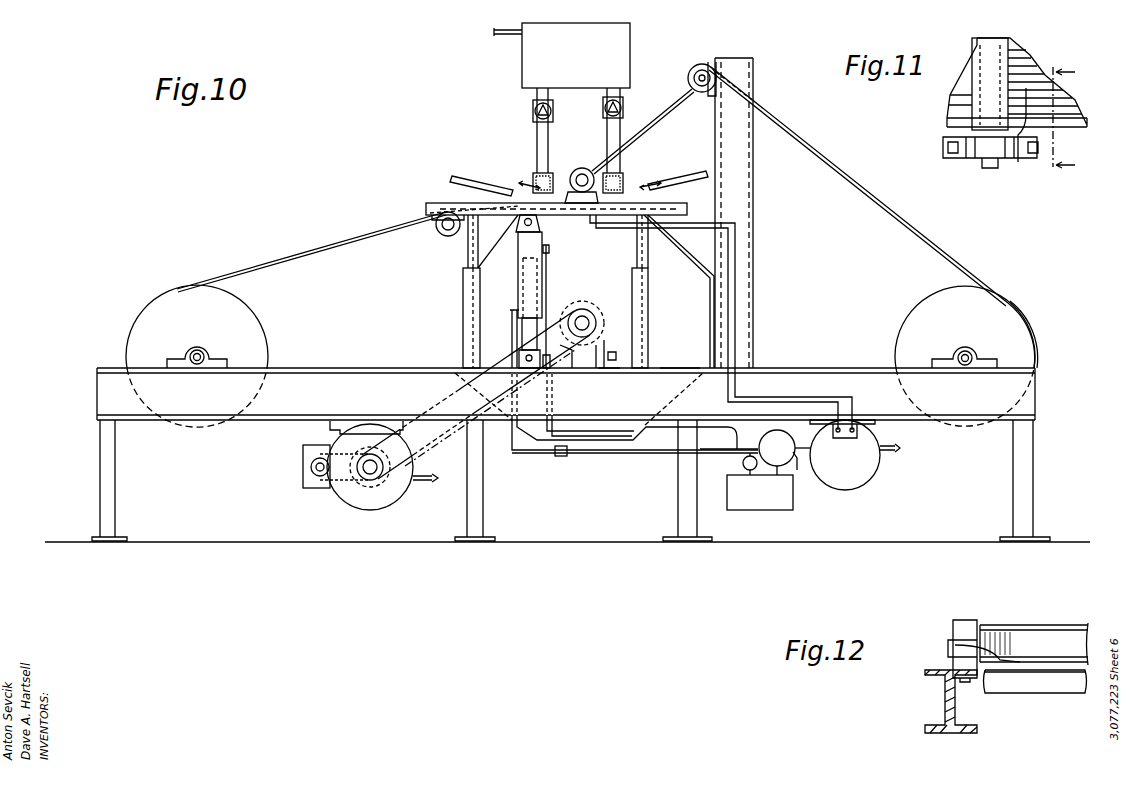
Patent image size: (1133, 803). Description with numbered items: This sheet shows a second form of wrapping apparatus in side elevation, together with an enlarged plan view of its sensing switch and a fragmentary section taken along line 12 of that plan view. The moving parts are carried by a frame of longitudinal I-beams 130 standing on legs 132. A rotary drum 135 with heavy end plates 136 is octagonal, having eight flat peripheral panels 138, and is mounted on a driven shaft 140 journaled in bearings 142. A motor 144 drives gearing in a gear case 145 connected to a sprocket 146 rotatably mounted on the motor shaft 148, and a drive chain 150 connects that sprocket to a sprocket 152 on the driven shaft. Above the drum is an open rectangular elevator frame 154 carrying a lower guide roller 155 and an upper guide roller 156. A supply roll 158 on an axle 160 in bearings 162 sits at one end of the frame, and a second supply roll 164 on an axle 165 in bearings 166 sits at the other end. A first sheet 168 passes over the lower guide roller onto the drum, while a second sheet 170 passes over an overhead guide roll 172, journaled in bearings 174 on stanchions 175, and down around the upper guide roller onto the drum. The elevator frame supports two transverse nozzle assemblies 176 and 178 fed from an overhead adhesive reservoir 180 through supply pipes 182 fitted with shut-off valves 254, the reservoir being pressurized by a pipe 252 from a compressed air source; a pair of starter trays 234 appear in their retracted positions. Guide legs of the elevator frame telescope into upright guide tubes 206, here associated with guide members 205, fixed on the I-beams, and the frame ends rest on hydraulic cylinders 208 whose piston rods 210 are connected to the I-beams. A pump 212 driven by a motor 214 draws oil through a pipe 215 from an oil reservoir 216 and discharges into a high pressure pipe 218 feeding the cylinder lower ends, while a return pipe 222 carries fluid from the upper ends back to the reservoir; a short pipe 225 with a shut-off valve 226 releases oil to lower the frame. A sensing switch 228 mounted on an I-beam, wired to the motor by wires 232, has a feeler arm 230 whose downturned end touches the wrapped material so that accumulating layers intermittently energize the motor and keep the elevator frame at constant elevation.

In FIG. 10, the longitudinal I-beams 130 is at (125, 410).
In FIG. 12, the longitudinal I-beams 130 is at (944, 695).
In FIG. 10, the legs 132 is at (1045, 511).
In FIG. 10, the rotary drum 135 is at (676, 412).
In FIG. 10, the end plates 136 is at (686, 344).
In FIG. 10, the flat peripheral panels 138 is at (503, 423).
In FIG. 10, the driven shaft 140 is at (584, 318).
In FIG. 10, the bearings 142 is at (608, 340).
In FIG. 10, the motor 144 is at (352, 492).
In FIG. 10, the gear case 145 is at (320, 490).
In FIG. 10, the sprocket 146 is at (398, 455).
In FIG. 10, the motor shaft 148 is at (369, 453).
In FIG. 10, the drive chain 150 is at (426, 468).
In FIG. 10, the sprocket 152 is at (576, 350).
In FIG. 10, the elevator frame 154 is at (446, 193).
In FIG. 10, the lower guide roller 155 is at (437, 234).
In FIG. 10, the upper guide roller 156 is at (582, 205).
In FIG. 10, the supply roll 158 is at (266, 332).
In FIG. 10, the axle 160 is at (210, 353).
In FIG. 10, the bearings 162 is at (190, 352).
In FIG. 10, the second supply roll 164 is at (900, 322).
In FIG. 10, the axle 165 is at (974, 351).
In FIG. 10, the bearings 166 is at (958, 350).
In FIG. 10, the first sheet 168 is at (268, 264).
In FIG. 10, the second sheet 170 is at (936, 246).
In FIG. 10, the overhead guide roll 172 is at (692, 90).
In FIG. 10, the bearings 174 is at (704, 93).
In FIG. 10, the stanchions 175 is at (748, 198).
In FIG. 10, the nozzle assembly 176 is at (558, 171).
In FIG. 10, the nozzle assembly 178 is at (629, 176).
In FIG. 10, the adhesive reservoir 180 is at (626, 33).
In FIG. 10, the supply pipes 182 is at (626, 98).
In FIG. 10, the guide posts 205 is at (637, 252).
In FIG. 10, the guide tubes 206 is at (650, 290).
In FIG. 10, the hydraulic cylinders 208 is at (515, 262).
In FIG. 10, the piston rods 210 is at (522, 325).
In FIG. 10, the pump 212 is at (765, 431).
In FIG. 10, the motor 214 is at (855, 475).
In FIG. 10, the pipe 215 is at (800, 476).
In FIG. 10, the oil reservoir 216 is at (765, 510).
In FIG. 10, the pipe 218 is at (708, 455).
In FIG. 10, the return pipe 222 is at (597, 428).
In FIG. 10, the short pipe 225 is at (748, 471).
In FIG. 10, the shut-off valve 226 is at (779, 470).
In FIG. 10, the sensing switch 228 is at (588, 166).
In FIG. 11, the sensing switch 228 is at (1025, 160).
In FIG. 12, the sensing switch 228 is at (948, 650).
In FIG. 11, the feeler arm 230 is at (1070, 100).
In FIG. 12, the feeler arm 230 is at (1005, 655).
In FIG. 10, the wires 232 is at (770, 396).
In FIG. 10, the starter trays 234 is at (690, 176).
In FIG. 10, the pipe 252 is at (510, 29).
In FIG. 10, the shut-off valves 254 is at (532, 113).
In FIG. 11, the section line 12— 12 is at (1074, 119).